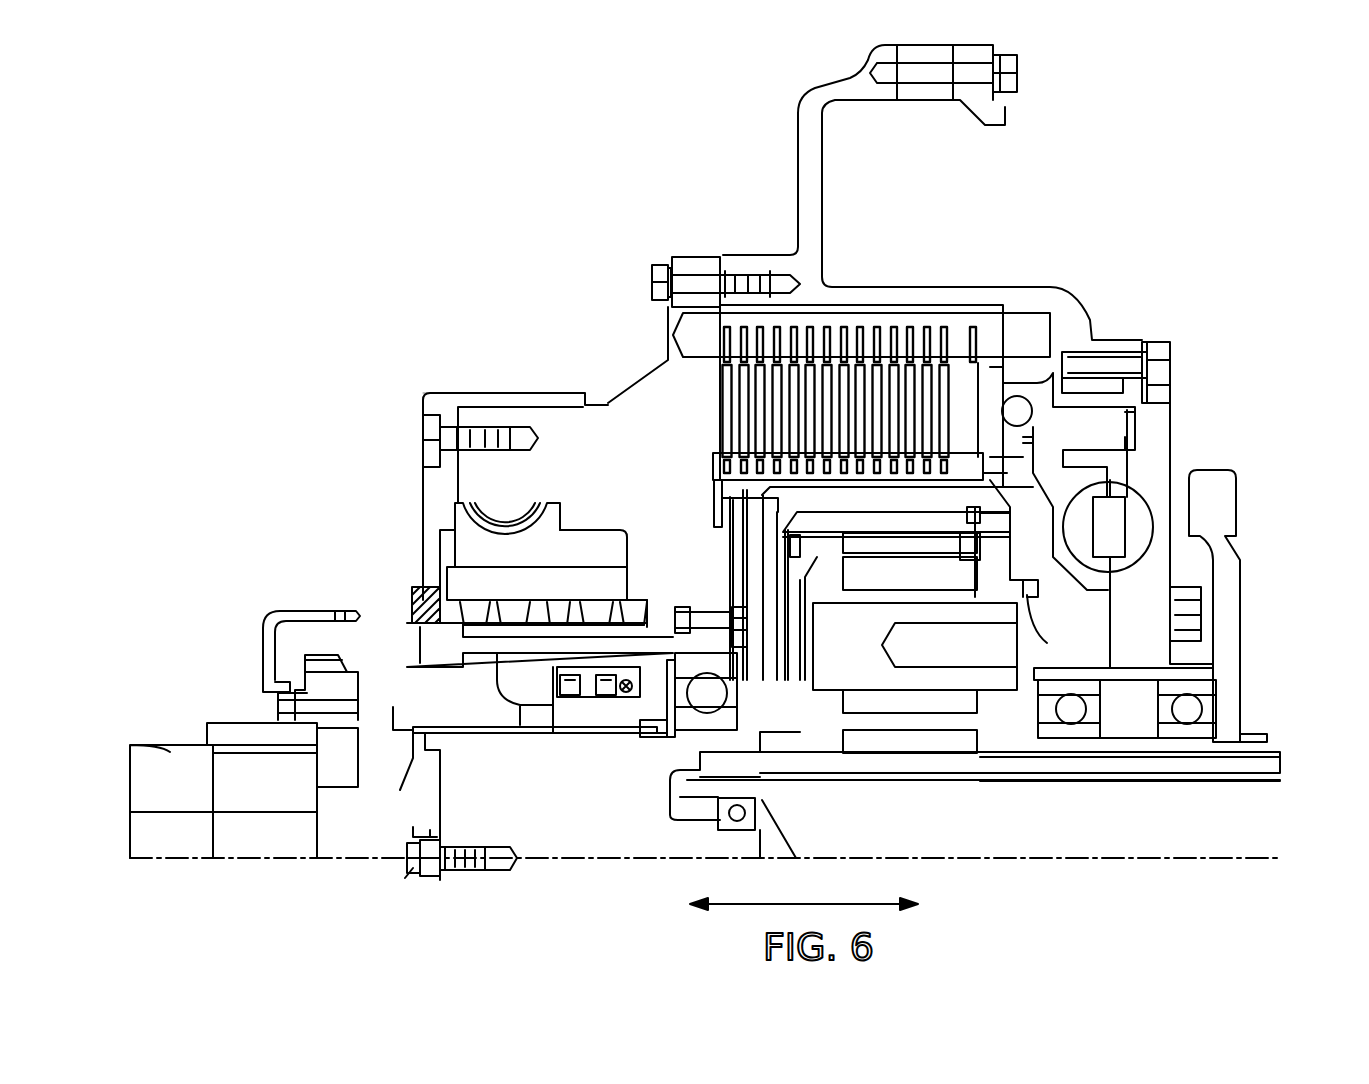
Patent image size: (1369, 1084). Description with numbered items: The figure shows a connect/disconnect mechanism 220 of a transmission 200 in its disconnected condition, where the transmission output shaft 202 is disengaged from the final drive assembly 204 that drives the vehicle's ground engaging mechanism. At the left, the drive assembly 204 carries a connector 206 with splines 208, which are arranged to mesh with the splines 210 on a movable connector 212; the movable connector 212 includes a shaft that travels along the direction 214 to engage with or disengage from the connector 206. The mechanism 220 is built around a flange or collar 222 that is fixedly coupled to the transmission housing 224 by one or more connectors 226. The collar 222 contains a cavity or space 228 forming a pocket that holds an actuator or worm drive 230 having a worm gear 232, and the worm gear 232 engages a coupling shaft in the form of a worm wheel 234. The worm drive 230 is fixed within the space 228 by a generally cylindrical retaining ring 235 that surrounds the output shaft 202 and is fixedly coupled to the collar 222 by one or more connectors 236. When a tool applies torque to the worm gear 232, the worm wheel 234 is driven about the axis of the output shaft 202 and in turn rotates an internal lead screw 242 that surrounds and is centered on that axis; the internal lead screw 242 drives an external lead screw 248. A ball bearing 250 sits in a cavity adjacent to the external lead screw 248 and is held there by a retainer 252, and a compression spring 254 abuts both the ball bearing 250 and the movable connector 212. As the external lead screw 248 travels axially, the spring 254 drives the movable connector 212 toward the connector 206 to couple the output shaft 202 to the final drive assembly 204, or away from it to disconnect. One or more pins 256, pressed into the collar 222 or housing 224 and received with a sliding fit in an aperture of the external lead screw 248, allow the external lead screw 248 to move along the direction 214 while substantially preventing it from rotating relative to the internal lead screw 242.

The transmission 200 is at (1152, 125).
The transmission output shaft 202 is at (605, 840).
The final drive assembly 204 is at (240, 840).
The connector 206 is at (258, 644).
The splines 208 is at (327, 650).
The splines 210 is at (458, 660).
The movable connector 212 is at (522, 712).
The direction 214 is at (832, 902).
The connect/disconnect mechanism 220 is at (313, 366).
The collar 222 is at (628, 398).
The transmission housing 224 is at (803, 252).
The connectors 226 is at (657, 268).
The space 228 is at (613, 540).
The worm drive 230 is at (508, 503).
The worm gear 232 is at (552, 506).
The worm wheel 234 is at (465, 553).
The retaining ring 235 is at (452, 398).
The connectors 236 is at (424, 439).
The internal lead screw 242 is at (412, 604).
The external lead screw 248 is at (648, 612).
The ball bearing 250 is at (598, 700).
The retainer 252 is at (648, 738).
The compression spring 254 is at (498, 702).
The pins 256 is at (548, 640).